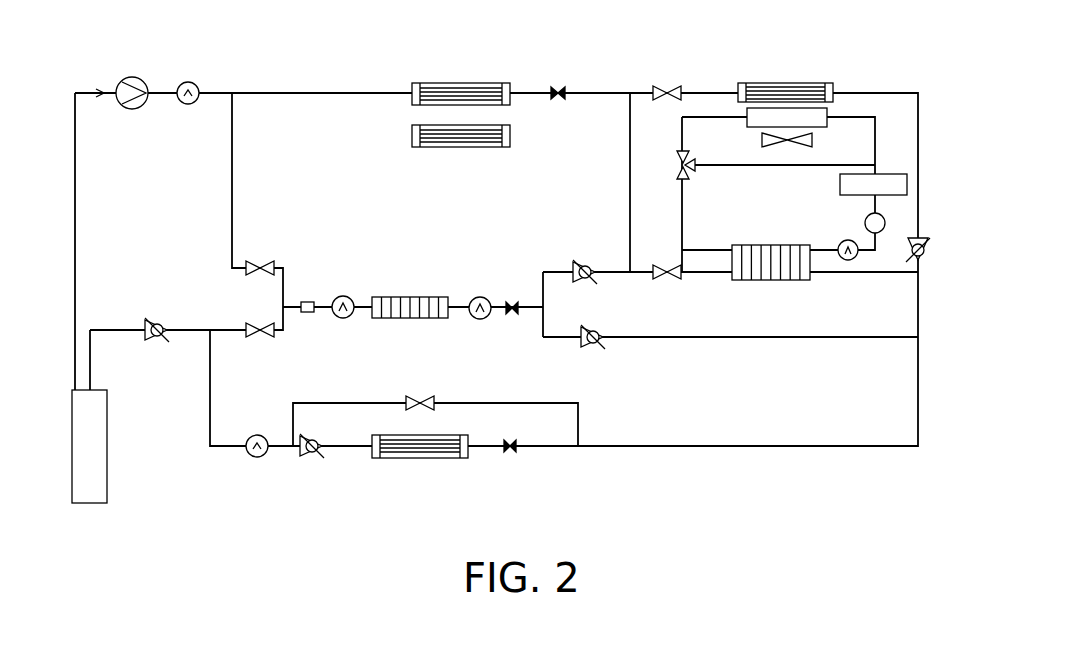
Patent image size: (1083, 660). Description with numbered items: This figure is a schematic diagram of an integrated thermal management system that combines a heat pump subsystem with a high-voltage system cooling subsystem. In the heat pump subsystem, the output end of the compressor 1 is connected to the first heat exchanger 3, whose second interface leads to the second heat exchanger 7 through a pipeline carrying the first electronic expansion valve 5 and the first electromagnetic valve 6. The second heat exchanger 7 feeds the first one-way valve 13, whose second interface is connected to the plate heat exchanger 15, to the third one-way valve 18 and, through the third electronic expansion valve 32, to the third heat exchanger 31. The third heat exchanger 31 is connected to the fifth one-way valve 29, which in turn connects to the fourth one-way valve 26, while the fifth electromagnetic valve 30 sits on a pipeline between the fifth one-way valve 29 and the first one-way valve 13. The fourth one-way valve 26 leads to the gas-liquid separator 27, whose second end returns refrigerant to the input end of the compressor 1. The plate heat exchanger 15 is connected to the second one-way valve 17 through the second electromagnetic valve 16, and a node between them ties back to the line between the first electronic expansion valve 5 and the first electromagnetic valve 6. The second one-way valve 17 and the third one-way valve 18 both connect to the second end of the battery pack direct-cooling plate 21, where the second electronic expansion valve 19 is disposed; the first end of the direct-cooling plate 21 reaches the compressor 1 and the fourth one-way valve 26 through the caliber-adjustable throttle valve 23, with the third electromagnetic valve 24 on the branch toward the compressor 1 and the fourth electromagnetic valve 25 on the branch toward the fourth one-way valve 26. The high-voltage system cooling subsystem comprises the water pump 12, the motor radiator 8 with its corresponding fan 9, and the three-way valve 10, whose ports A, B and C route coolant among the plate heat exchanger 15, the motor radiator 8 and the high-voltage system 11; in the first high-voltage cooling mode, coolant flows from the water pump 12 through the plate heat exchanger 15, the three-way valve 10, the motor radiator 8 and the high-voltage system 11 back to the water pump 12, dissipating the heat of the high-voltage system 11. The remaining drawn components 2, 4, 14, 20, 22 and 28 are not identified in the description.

The compressor 1 is at (141, 80).
The pressure gauge 2 is at (193, 82).
The first heat exchanger 3 is at (462, 82).
The heat exchanger 4 is at (462, 148).
The first electronic expansion valve 5 is at (559, 86).
The first electromagnetic valve 6 is at (670, 86).
The second heat exchanger 7 is at (784, 82).
The motor radiator 8 is at (746, 121).
The fan 9 is at (814, 142).
The three-way valve 10 is at (677, 165).
The high-voltage system 11 is at (839, 186).
The water pump 12 is at (864, 223).
The first one-way valve 13 is at (930, 248).
The pump 14 is at (838, 246).
The plate heat exchanger 15 is at (748, 246).
The second electromagnetic valve 16 is at (676, 280).
The second one-way valve 17 is at (579, 262).
The third one-way valve 18 is at (600, 350).
The second electronic expansion valve 19 is at (512, 300).
The pump 20 is at (476, 298).
The battery pack direct-cooling plate 21 is at (411, 296).
The pump 22 is at (340, 296).
The caliber-adjustable throttle valve 23 is at (310, 314).
The third electromagnetic valve 24 is at (268, 262).
The fourth electromagnetic valve 25 is at (262, 340).
The fourth one-way valve 26 is at (166, 321).
The gas-liquid separator 27 is at (110, 427).
The pressure gauge 28 is at (262, 458).
The fifth one-way valve 29 is at (316, 458).
The fifth electromagnetic valve 30 is at (432, 394).
The third heat exchanger 31 is at (436, 462).
The third electronic expansion valve 32 is at (514, 456).